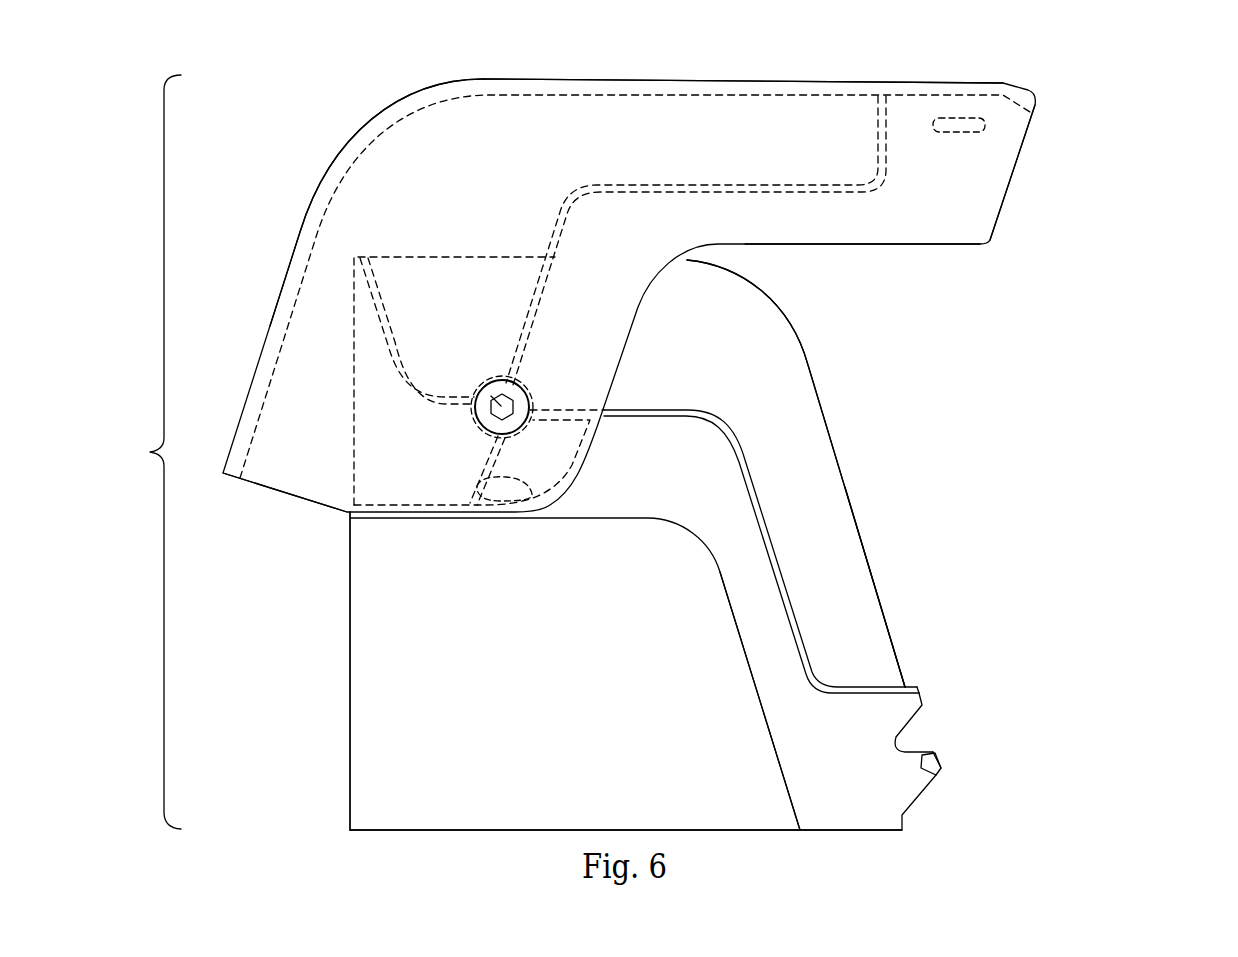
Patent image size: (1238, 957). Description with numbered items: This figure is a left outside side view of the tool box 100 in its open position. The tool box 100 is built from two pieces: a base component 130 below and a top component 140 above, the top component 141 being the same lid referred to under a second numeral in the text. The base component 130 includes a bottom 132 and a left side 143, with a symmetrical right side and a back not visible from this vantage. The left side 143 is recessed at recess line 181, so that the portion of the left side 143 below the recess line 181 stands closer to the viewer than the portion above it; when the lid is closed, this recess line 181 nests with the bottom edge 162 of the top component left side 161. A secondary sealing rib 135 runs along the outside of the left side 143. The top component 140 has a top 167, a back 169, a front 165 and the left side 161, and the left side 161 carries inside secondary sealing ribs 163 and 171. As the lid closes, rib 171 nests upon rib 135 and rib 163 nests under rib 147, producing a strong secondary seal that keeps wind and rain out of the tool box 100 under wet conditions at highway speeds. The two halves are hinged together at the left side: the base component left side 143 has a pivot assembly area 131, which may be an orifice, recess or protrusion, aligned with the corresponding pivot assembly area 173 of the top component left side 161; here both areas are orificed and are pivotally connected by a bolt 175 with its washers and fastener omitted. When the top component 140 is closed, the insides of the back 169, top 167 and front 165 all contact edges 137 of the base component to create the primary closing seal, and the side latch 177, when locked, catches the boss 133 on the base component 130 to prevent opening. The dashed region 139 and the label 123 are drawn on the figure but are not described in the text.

The tool box 100 is at (137, 452).
The top component 140 is at (1113, 185).
The base component 130 is at (965, 553).
The top component front 165 is at (677, 81).
The top component top 167 is at (297, 232).
The top component back 169 is at (292, 495).
The top component left side 161 is at (963, 198).
The bottom edge 162 is at (945, 246).
The side latch 177 is at (984, 130).
The secondary sealing rib 171 is at (564, 197).
The recess 139 is at (480, 257).
The rib 147 is at (405, 387).
The pivot assembly area 173 is at (510, 393).
The bolt 175 is at (481, 394).
The pivot assembly area 131 is at (530, 393).
The secondary sealing rib 163 is at (533, 487).
The left side 143 is at (808, 473).
The secondary sealing rib 135 is at (780, 560).
The edge 137 is at (888, 627).
The boss 133 is at (903, 741).
The top component 141 is at (845, 830).
The recess line 181 is at (752, 680).
The front wall 123 is at (350, 720).
The bottom 132 is at (368, 830).